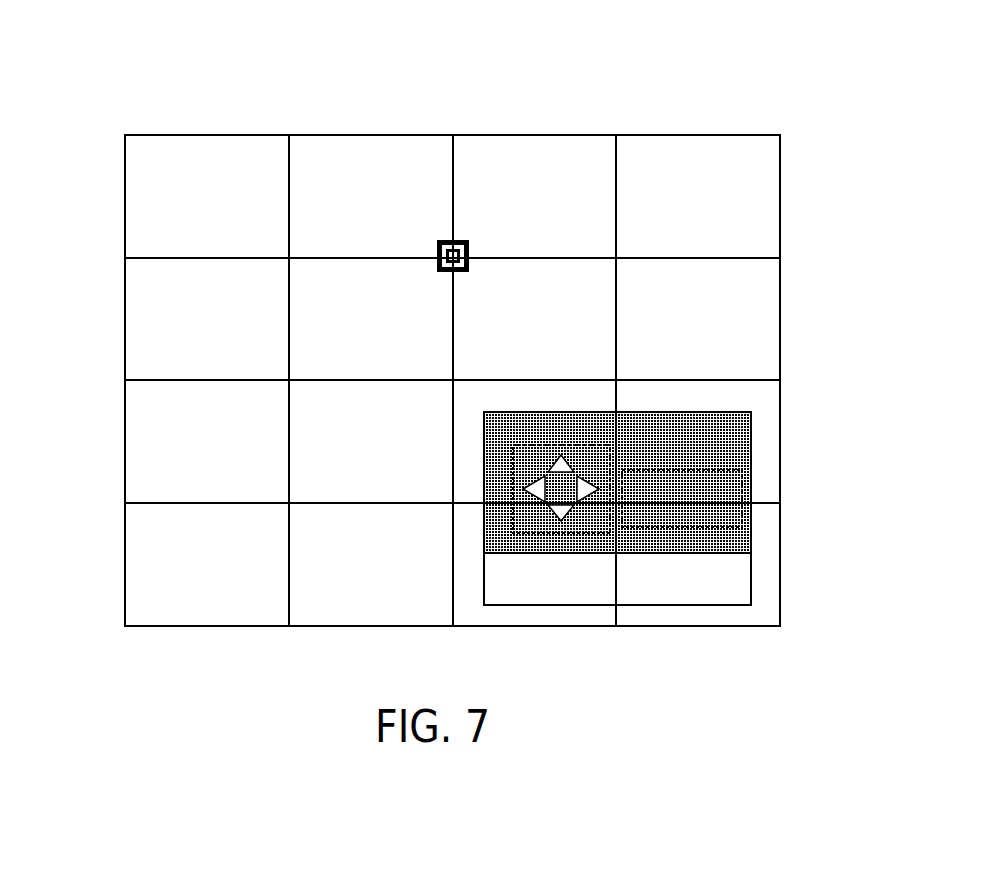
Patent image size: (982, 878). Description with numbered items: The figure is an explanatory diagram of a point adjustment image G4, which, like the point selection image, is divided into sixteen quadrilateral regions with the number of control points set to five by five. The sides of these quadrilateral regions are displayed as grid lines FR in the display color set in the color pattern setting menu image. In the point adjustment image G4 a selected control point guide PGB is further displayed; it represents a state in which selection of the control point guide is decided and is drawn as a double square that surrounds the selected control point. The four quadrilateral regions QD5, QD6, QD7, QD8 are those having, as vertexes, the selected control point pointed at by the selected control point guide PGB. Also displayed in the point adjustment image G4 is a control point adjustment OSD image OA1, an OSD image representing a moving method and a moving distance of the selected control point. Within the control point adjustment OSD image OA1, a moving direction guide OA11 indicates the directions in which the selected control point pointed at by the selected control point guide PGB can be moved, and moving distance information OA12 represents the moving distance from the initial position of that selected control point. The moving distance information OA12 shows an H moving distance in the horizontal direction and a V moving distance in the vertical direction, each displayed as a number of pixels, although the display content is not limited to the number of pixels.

The point adjustment image G4 is at (712, 64).
The grid lines FR is at (615, 158).
The quadrilateral region QD5 is at (348, 160).
The quadrilateral region QD6 is at (490, 163).
The quadrilateral region QD7 is at (312, 315).
The quadrilateral region QD8 is at (597, 315).
The selected control point guide PGB is at (457, 240).
The control point adjustment OSD image OA1 is at (752, 446).
The moving direction guide OA11 is at (513, 480).
The moving distance information OA12 is at (748, 513).